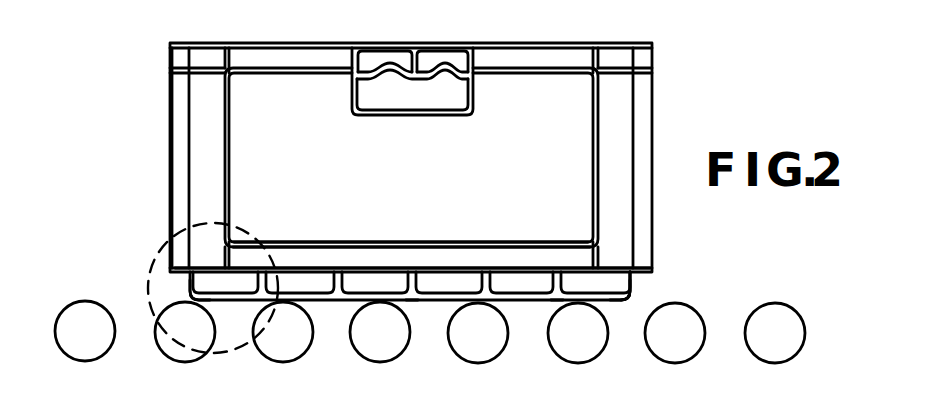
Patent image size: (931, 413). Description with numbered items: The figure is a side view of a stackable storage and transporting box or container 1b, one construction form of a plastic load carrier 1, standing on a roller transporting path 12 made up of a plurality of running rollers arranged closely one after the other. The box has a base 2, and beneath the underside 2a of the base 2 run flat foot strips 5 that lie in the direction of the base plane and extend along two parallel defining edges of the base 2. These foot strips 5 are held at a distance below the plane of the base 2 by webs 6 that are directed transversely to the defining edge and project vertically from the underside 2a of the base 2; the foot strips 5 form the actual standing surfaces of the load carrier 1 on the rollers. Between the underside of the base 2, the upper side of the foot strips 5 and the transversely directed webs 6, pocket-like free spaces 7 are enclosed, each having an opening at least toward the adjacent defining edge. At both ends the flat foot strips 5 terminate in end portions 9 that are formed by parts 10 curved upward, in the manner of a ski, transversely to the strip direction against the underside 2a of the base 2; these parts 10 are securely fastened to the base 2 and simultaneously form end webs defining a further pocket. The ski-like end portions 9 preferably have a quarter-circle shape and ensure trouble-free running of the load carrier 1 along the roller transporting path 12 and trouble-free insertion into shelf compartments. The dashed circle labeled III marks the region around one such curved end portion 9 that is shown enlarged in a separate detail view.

The load carrier 1 is at (660, 56).
The storage and transporting box or container 1b is at (170, 127).
The base 2 is at (394, 270).
The underside of the base 2a is at (644, 281).
The flat foot strips 5 is at (323, 302).
The webs 6 is at (411, 281).
The free spaces 7 is at (283, 279).
The end portions 9 is at (222, 302).
The parts forming the end webs 10 is at (188, 289).
The roller transporting path 12 is at (84, 298).
The section detail circle III is at (167, 242).